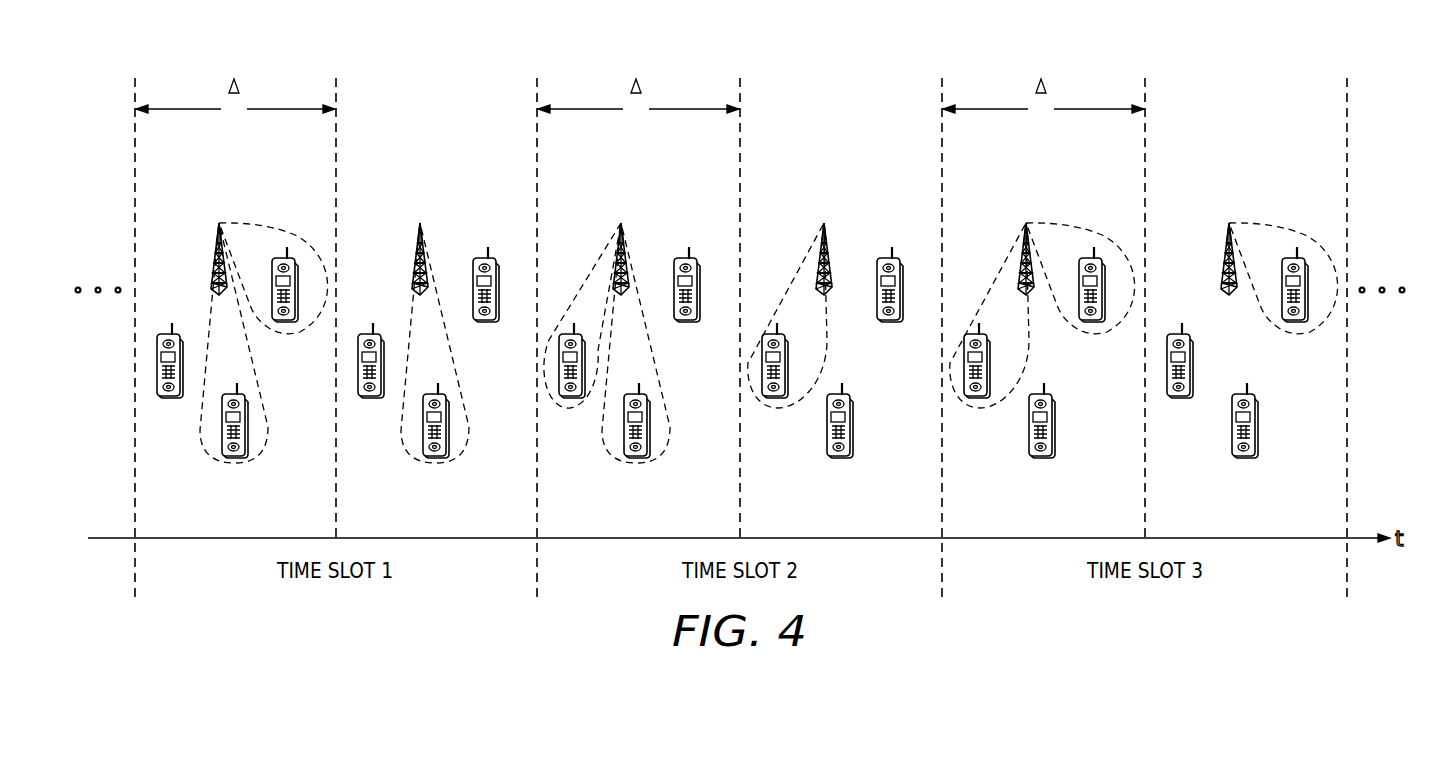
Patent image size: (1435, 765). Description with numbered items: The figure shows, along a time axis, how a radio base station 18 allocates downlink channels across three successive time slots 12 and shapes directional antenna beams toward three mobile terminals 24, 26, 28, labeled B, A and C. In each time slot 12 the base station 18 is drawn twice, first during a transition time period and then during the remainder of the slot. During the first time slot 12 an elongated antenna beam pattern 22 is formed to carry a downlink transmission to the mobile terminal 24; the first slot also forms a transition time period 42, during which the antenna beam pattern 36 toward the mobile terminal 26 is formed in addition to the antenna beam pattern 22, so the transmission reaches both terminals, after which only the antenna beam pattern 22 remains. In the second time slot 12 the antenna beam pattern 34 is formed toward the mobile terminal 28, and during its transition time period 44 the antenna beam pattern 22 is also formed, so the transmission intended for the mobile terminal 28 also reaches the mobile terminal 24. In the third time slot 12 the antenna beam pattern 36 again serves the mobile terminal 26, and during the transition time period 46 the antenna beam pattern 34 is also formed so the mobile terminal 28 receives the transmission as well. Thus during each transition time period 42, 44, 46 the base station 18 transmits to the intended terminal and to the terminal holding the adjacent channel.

The time slot 12 is at (449, 64).
The radio base station 18 is at (702, 246).
The antenna beam pattern 22 is at (434, 368).
The mobile terminal 24 is at (753, 442).
The mobile terminal 26 is at (802, 307).
The mobile terminal 28 is at (677, 384).
The antenna beam pattern 34 is at (811, 315).
The antenna beam pattern 36 is at (778, 258).
The transition time period 42 is at (235, 101).
The transition time period 44 is at (638, 101).
The transition time period 46 is at (1043, 101).